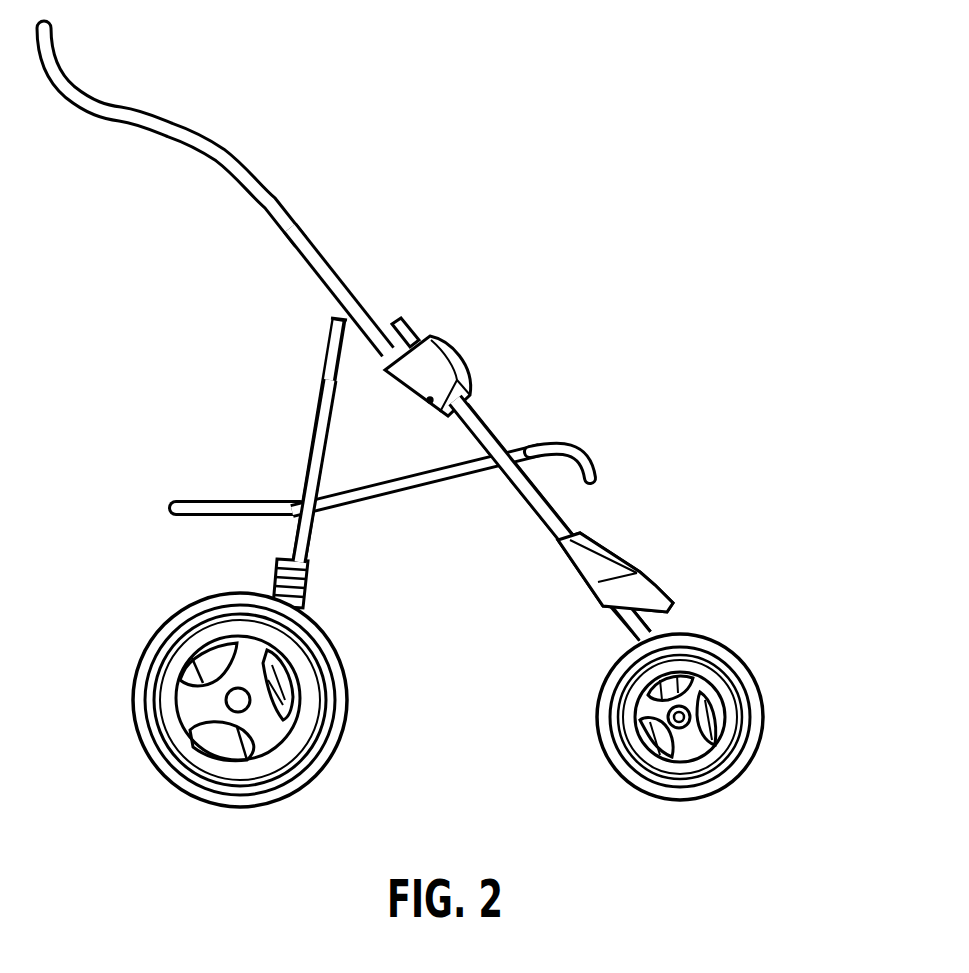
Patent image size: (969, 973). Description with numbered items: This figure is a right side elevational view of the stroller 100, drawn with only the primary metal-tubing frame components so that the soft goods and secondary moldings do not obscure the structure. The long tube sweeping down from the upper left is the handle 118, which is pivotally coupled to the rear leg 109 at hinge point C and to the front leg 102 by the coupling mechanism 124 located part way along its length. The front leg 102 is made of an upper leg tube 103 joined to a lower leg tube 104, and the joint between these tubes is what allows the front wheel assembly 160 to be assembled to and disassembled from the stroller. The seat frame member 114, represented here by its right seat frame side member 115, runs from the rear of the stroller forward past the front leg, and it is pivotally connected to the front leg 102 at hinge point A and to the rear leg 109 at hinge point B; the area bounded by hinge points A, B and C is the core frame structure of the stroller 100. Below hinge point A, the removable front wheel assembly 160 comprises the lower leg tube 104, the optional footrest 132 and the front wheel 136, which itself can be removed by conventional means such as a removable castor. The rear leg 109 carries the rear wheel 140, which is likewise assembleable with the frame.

The stroller 100 is at (448, 417).
The right front leg 102 is at (573, 393).
The right upper leg tube 103 is at (500, 432).
The right lower leg tube 104 is at (657, 632).
The right rear leg 109 is at (320, 363).
The seat frame member 114 is at (223, 490).
The right seat frame side member 115 is at (420, 493).
The handle 118 is at (200, 157).
The coupling mechanism 124 is at (462, 354).
The footrest 132 is at (633, 572).
The right front wheel 136 is at (757, 685).
The right rear wheel 140 is at (138, 700).
The front wheel assembly 160 is at (575, 578).
The hinge point A is at (517, 446).
The hinge point B is at (287, 518).
The hinge point C is at (367, 292).